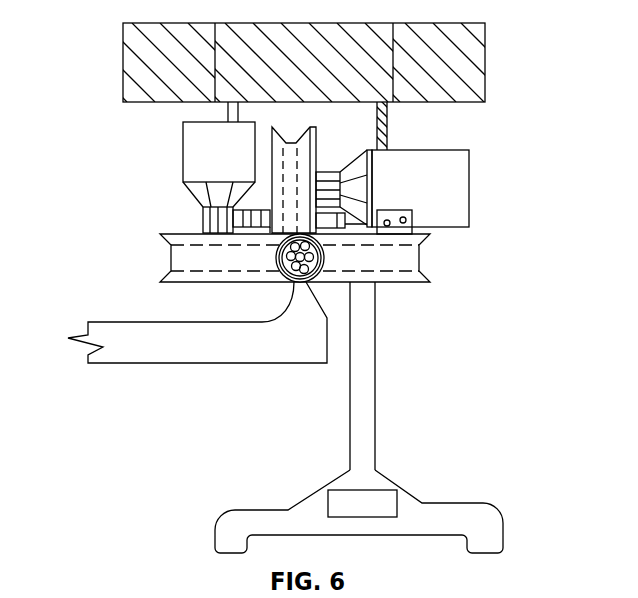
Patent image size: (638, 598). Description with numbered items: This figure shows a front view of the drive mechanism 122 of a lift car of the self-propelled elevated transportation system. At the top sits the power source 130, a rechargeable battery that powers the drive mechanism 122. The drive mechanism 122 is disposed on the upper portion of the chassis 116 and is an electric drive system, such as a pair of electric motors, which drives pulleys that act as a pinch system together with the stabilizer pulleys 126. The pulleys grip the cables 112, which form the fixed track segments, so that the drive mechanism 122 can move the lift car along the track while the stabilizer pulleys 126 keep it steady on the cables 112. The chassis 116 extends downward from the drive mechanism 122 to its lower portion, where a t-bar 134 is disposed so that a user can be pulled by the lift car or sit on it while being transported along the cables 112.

The power source 130 is at (122, 63).
The drive mechanism 122 is at (183, 153).
The stabilizer pulleys 126 is at (405, 275).
The cables 112 is at (292, 281).
The chassis 116 is at (352, 394).
The t-bar 134 is at (465, 517).